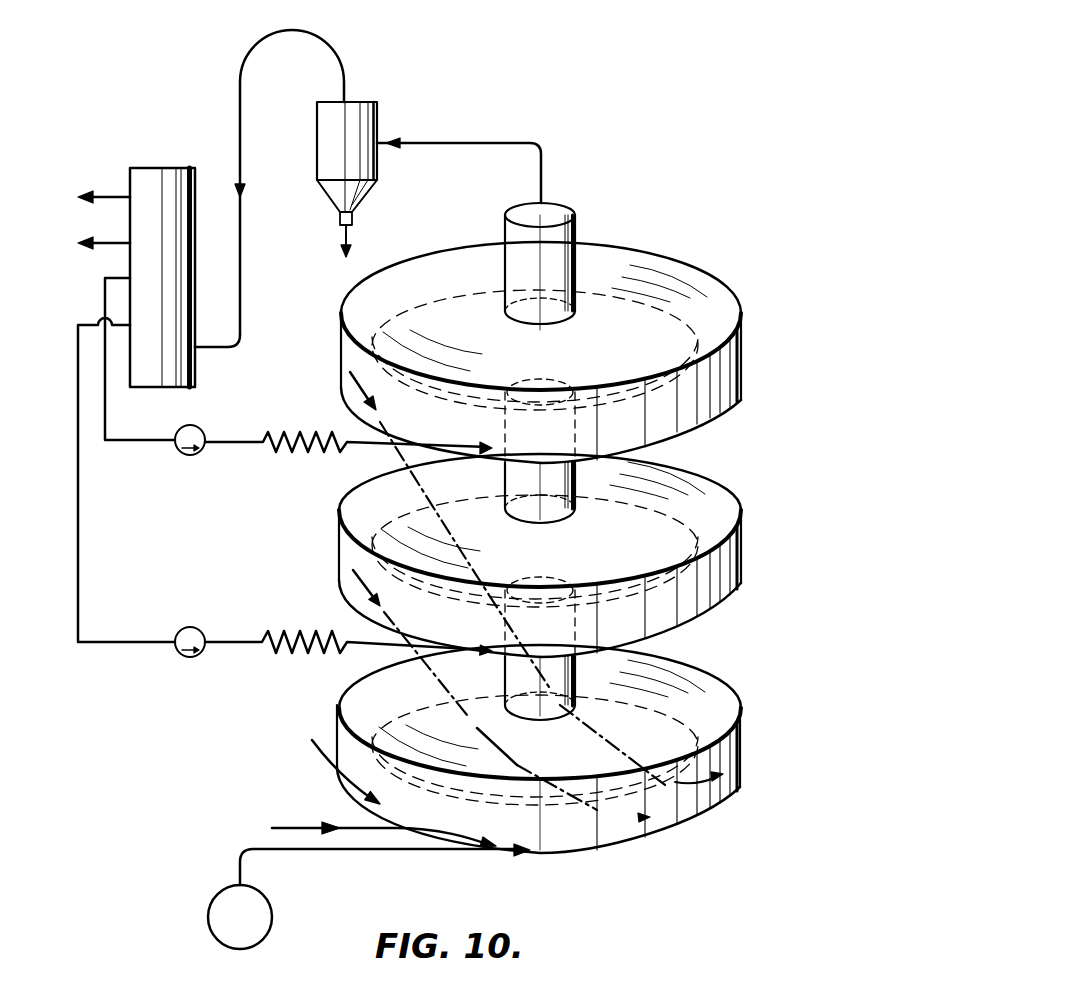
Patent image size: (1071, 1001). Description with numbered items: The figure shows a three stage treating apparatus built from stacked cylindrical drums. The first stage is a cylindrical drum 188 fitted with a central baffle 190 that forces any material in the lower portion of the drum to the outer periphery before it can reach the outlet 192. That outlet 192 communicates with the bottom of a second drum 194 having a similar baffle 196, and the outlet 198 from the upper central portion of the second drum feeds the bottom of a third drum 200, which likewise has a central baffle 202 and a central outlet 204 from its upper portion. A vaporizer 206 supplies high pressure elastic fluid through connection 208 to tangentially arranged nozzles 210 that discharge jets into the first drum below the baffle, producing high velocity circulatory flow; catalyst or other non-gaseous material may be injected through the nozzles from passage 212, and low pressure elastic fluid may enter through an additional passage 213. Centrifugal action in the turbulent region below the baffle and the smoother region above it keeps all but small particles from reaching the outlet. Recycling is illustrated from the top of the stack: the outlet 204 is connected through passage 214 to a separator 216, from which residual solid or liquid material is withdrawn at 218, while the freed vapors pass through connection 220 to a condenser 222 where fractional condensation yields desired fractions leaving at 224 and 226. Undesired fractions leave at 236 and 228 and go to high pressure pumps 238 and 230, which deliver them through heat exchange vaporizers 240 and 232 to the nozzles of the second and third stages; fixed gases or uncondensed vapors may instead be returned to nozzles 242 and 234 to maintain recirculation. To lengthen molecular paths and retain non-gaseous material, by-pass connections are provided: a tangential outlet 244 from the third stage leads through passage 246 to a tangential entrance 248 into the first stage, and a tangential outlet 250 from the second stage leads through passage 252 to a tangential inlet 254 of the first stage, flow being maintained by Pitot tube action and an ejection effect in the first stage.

The first stage drum 188 is at (738, 730).
The central baffle 190 is at (733, 673).
The outlet 192 is at (510, 670).
The second drum 194 is at (738, 554).
The baffle 196 is at (733, 491).
The outlet 198 is at (508, 475).
The third drum 200 is at (741, 366).
The central baffle 202 is at (728, 308).
The central outlet 204 is at (576, 228).
The vaporizer 206 is at (273, 913).
The connection 208 is at (308, 850).
The tangentially arranged nozzles 210 is at (525, 856).
The passage 212 is at (383, 817).
The additional passage 213 is at (330, 762).
The passage 214 is at (549, 163).
The separator 216 is at (371, 113).
The separated material withdrawal 218 is at (352, 233).
The connection 220 is at (339, 62).
The condenser 222 is at (198, 265).
The desired fraction outlet 224 is at (112, 194).
The desired fraction outlet 226 is at (112, 240).
The undesired fraction outlet 228 is at (80, 550).
The high pressure pump 230 is at (200, 630).
The heat exchange vaporizer 232 is at (305, 630).
The nozzle 234 is at (484, 640).
The undesired fraction outlet 236 is at (127, 442).
The high pressure pump 238 is at (203, 426).
The heat exchange vaporizer 240 is at (301, 430).
The nozzle 242 is at (482, 445).
The tangential outlet 244 is at (352, 380).
The passage 246 is at (472, 565).
The tangential entrance 248 is at (704, 780).
The tangential outlet 250 is at (352, 580).
The passage 252 is at (507, 748).
The tangential inlet 254 is at (643, 818).